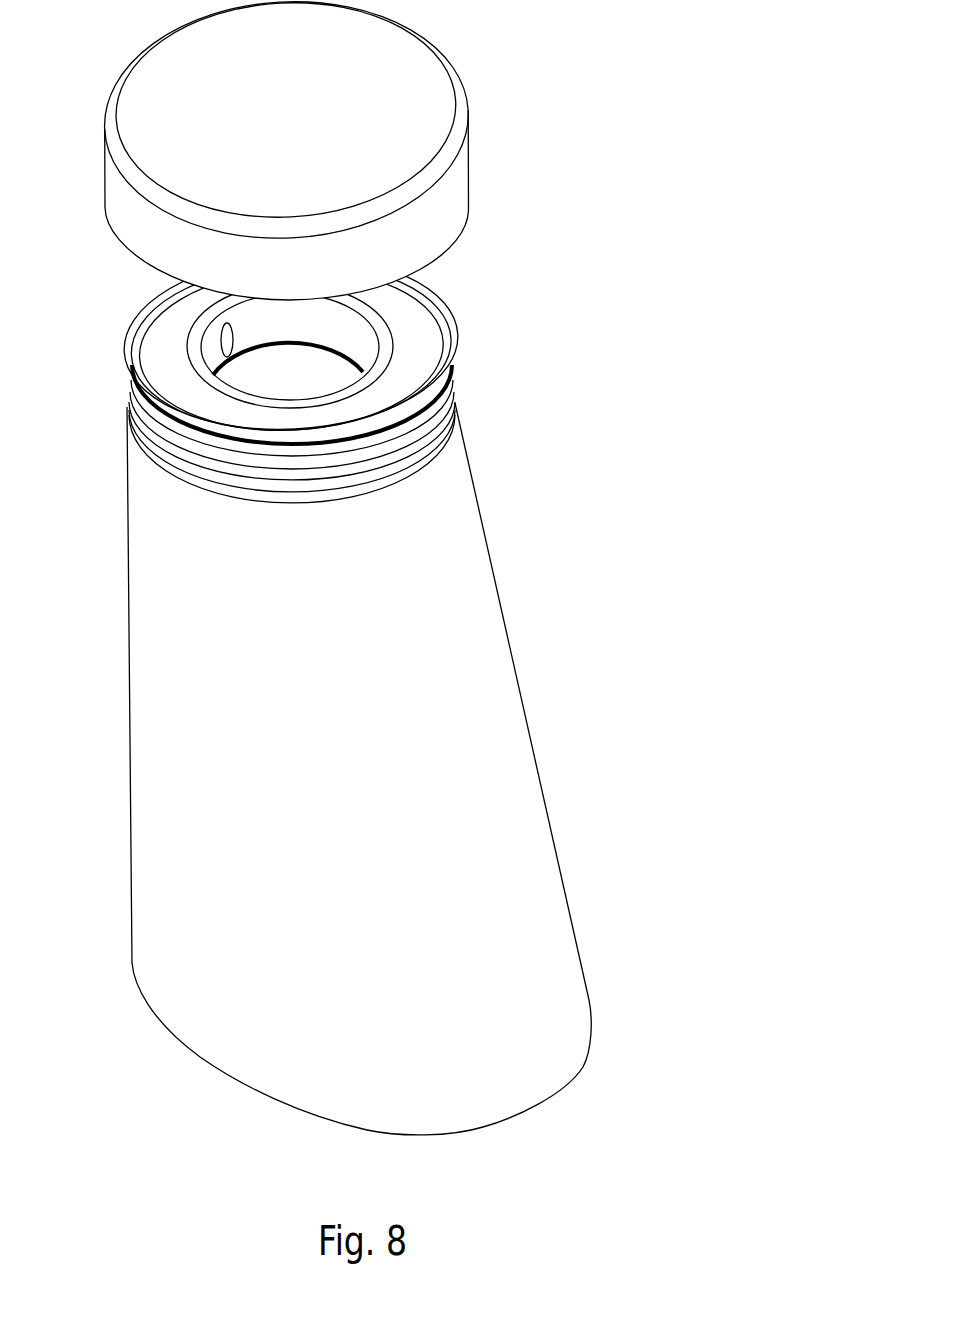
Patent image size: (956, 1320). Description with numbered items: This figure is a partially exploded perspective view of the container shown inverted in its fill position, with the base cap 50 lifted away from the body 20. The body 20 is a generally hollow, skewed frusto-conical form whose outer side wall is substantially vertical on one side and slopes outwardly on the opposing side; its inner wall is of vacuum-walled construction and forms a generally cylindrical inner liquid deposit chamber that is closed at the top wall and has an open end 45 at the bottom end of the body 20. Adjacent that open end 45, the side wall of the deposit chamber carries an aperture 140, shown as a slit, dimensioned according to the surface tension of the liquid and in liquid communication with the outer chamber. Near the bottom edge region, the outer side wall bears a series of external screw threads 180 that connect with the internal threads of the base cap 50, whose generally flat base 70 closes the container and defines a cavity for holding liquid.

The body 20 is at (420, 701).
The open end 45 is at (300, 383).
The base cap 50 is at (440, 203).
The flat base 70 is at (377, 101).
The aperture 140 is at (232, 338).
The external screw threads 180 is at (440, 422).